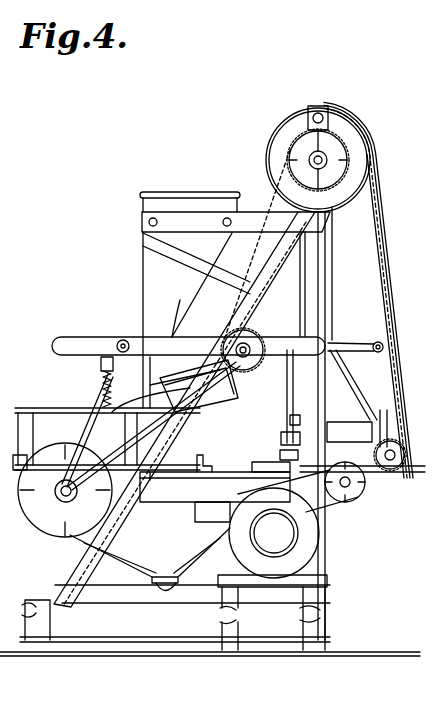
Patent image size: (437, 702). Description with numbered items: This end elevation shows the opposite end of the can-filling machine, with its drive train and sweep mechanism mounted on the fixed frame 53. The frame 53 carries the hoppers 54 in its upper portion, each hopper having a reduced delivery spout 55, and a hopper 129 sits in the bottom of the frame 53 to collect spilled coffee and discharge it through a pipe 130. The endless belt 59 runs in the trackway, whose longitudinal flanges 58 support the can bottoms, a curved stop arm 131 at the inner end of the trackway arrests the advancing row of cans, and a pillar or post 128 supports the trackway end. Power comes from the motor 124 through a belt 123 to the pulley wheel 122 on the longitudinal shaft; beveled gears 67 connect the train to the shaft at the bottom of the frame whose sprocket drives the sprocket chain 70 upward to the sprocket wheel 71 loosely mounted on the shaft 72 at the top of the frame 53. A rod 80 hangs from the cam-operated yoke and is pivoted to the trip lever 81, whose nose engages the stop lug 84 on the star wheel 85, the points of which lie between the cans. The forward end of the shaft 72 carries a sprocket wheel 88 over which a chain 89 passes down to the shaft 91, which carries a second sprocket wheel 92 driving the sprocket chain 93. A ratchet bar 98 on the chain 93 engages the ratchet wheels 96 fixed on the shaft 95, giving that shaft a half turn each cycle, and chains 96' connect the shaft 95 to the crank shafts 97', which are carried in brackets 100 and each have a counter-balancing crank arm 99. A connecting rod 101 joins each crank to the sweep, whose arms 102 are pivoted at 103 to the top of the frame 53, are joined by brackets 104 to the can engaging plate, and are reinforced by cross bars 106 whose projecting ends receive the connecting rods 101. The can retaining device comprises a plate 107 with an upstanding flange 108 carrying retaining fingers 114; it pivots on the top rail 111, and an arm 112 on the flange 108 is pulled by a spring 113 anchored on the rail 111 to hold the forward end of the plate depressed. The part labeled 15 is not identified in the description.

The frame bracket 15 is at (20, 472).
The frame 53 is at (52, 612).
The hopper 54 is at (141, 215).
The delivery spout 55 is at (170, 337).
The longitudinal flange 58 is at (200, 476).
The endless belt or conveyor 59 is at (236, 476).
The beveled gears 67 is at (389, 472).
The sprocket chain 70 is at (374, 190).
The sprocket wheel 71 is at (293, 130).
The shaft 72 is at (310, 160).
The rod 80 is at (300, 308).
The trip lever 81 is at (290, 424).
The stop lug 84 is at (284, 462).
The star wheel 85 is at (282, 441).
The sprocket wheel 88 is at (336, 156).
The chain 89 is at (281, 206).
The shaft 91 is at (236, 340).
The second sprocket wheel 92 is at (254, 362).
The sprocket chain 93 is at (64, 414).
The shaft 95 is at (70, 498).
The ratchet wheels 96 is at (65, 502).
The chains 96' is at (133, 423).
The crank shaft 97' is at (116, 325).
The ratchet bar 98 is at (117, 350).
The counter-balancing crank arm 99 is at (91, 346).
The bracket 100 is at (190, 300).
The connecting rod 101 is at (348, 343).
The arm 102 is at (372, 227).
The pivot 103 is at (326, 112).
The bracket 104 is at (372, 412).
The cross bar 106 is at (376, 352).
The plate 107 is at (210, 412).
The upstanding flange 108 is at (235, 402).
The top rail 111 is at (36, 412).
The arm 112 is at (102, 368).
The spring 113 is at (104, 390).
The retaining fingers 114 is at (166, 391).
The pulley wheel 122 is at (362, 493).
The belt 123 is at (338, 500).
The motor 124 is at (298, 555).
The pillar or post 128 is at (240, 612).
The hopper 129 is at (140, 580).
The pipe 130 is at (168, 600).
The curved stop arm 131 is at (214, 462).